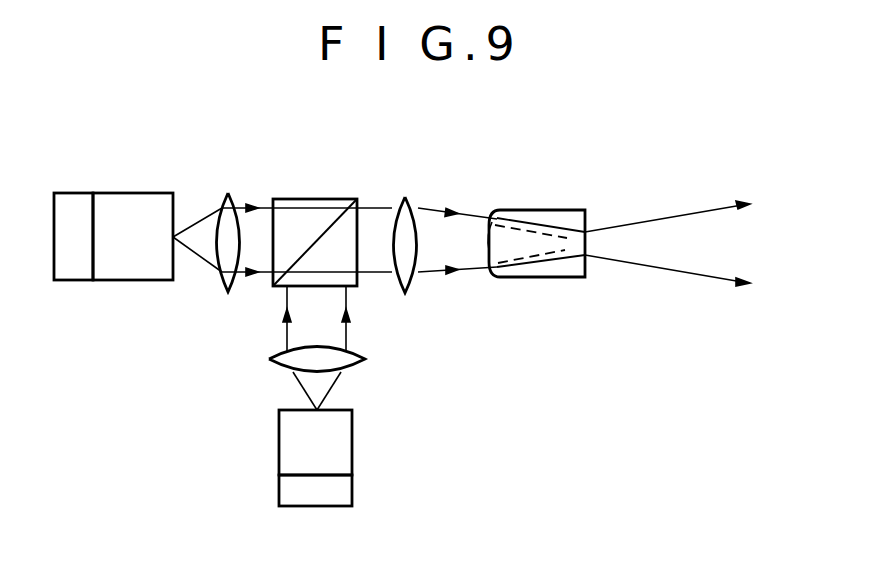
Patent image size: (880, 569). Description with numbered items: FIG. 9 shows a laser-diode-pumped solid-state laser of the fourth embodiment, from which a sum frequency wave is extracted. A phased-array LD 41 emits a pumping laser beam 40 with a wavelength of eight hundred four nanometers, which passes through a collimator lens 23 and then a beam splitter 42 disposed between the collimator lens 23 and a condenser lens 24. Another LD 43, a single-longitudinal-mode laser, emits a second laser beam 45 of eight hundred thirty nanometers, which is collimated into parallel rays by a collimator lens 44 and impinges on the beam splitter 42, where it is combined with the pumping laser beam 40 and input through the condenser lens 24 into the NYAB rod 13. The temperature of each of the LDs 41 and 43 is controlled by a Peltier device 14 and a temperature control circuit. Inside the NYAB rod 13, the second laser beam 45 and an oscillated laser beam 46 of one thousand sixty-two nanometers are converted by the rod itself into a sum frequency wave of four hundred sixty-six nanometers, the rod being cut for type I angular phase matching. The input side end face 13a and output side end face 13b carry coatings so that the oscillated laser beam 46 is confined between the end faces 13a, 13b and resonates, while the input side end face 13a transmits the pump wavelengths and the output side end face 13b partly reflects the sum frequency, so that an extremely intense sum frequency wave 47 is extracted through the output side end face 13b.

The Peltier device 14 is at (77, 205).
The phased-array LD 41 is at (135, 206).
The collimator lens 23 is at (226, 204).
The pumping laser beam 40 is at (264, 204).
The beam splitter 42 is at (332, 202).
The condenser lens 24 is at (414, 204).
The NYAB rod 13 is at (553, 197).
The input side end face 13a is at (490, 236).
The output side end face 13b is at (586, 212).
The oscillated laser beam 46 is at (549, 262).
The sum frequency wave 47 is at (684, 271).
The collimator lens 44 is at (270, 360).
The second laser beam 45 is at (296, 380).
The LD 43 is at (300, 440).